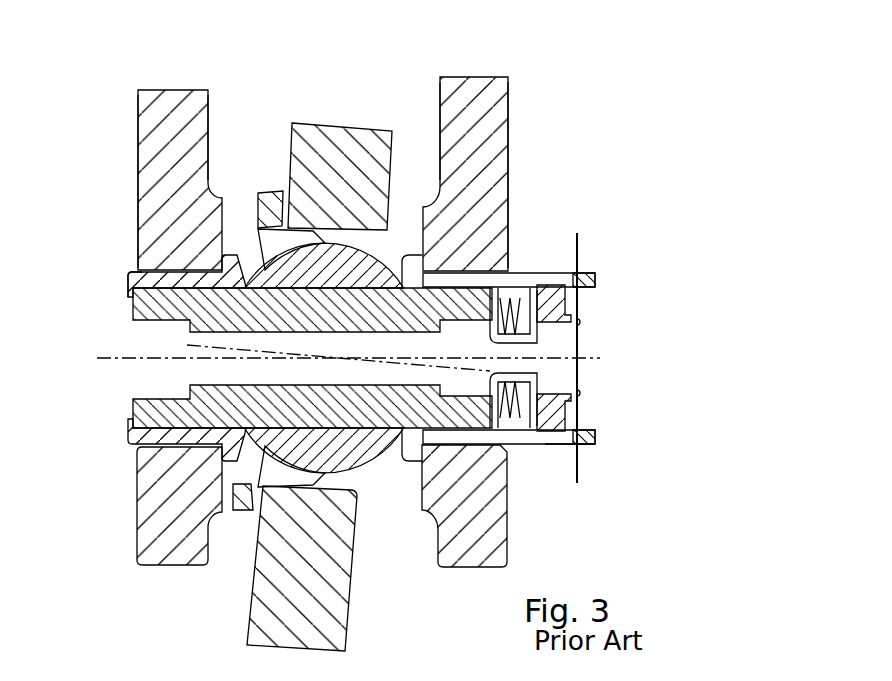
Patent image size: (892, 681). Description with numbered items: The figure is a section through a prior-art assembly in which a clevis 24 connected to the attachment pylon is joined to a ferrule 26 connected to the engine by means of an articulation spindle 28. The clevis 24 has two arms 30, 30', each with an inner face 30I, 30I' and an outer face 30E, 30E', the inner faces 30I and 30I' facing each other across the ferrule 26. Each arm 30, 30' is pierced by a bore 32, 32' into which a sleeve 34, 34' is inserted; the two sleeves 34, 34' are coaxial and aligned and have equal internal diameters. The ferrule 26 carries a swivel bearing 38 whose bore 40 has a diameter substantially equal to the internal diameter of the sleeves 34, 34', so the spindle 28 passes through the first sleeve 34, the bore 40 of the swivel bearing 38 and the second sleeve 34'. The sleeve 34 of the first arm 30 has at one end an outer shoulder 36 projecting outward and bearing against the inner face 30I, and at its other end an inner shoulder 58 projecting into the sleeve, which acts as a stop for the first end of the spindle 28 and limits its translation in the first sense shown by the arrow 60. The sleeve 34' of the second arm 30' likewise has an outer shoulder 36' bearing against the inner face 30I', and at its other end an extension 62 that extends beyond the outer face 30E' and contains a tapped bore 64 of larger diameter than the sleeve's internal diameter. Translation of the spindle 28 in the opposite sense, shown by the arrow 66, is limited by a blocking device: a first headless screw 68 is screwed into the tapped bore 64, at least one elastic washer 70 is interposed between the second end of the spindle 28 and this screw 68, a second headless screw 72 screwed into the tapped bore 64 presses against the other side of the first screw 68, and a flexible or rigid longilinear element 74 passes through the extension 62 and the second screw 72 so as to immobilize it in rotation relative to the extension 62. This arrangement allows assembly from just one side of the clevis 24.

The clevis 24 is at (545, 124).
The ferrule 26 is at (327, 612).
The articulation spindle 28 is at (247, 512).
The first arm 30 is at (180, 143).
The outer face of the first arm 30E is at (91, 176).
The inner face of the first arm 30I is at (235, 117).
The second arm 30' is at (467, 139).
The inner face of the second arm 30I' is at (426, 97).
The outer face of the second arm 30E' is at (564, 157).
The bore of the first arm 32 is at (150, 249).
The bore of the second arm 32' is at (509, 217).
The sleeve of the first arm 34 is at (151, 458).
The sleeve of the second arm 34' is at (509, 491).
The outer shoulder of the first sleeve 36 is at (140, 543).
The outer shoulder of the second sleeve 36' is at (450, 506).
The swivel bearing 38 is at (323, 235).
The bore of the swivel bearing 40 is at (350, 294).
The inner shoulder 58 is at (128, 292).
The arrow indicating the first sense 60 is at (100, 343).
The extension 62 is at (543, 447).
The tapped bore 64 is at (583, 300).
The arrow indicating the second sense 66 is at (603, 380).
The first headless screw 68 is at (535, 376).
The elastic washer 70 is at (520, 278).
The second headless screw 72 is at (547, 417).
The longilinear element 74 is at (580, 372).